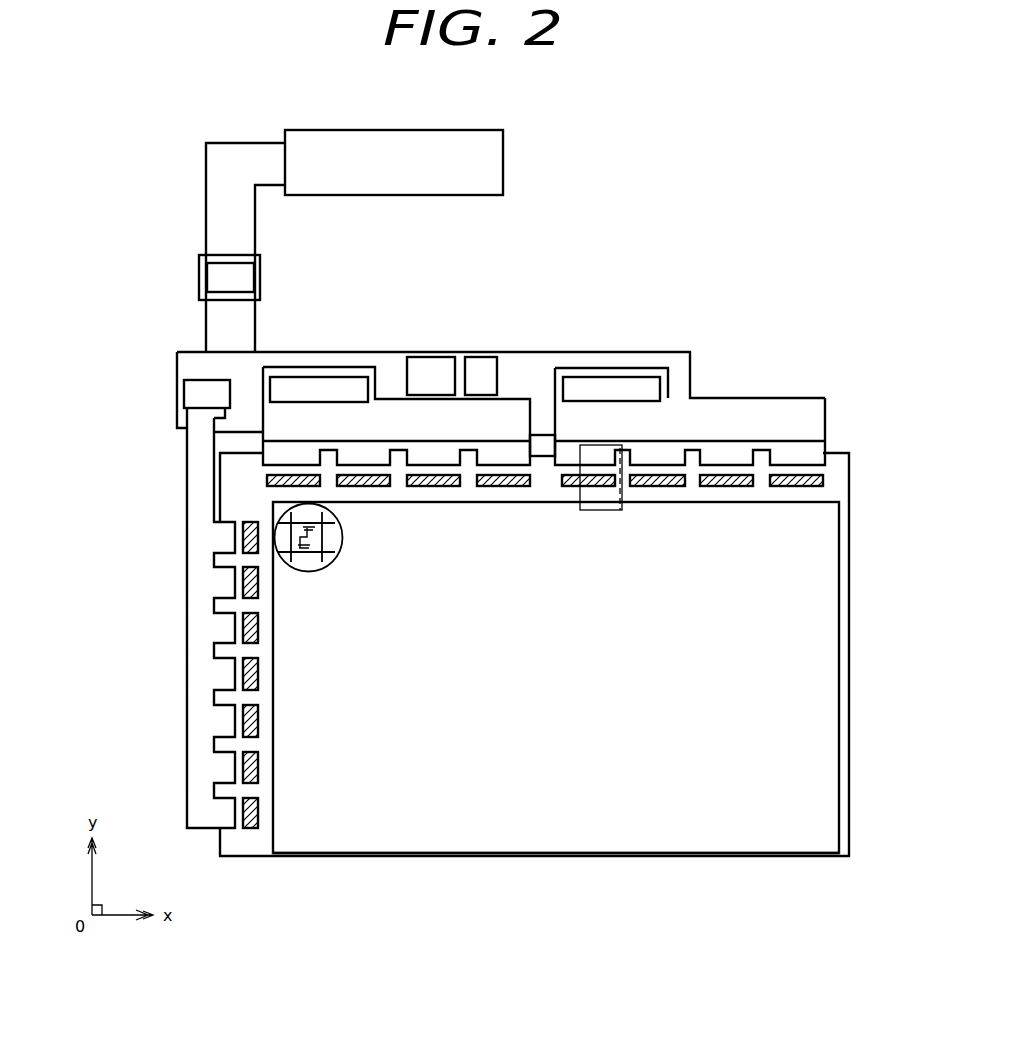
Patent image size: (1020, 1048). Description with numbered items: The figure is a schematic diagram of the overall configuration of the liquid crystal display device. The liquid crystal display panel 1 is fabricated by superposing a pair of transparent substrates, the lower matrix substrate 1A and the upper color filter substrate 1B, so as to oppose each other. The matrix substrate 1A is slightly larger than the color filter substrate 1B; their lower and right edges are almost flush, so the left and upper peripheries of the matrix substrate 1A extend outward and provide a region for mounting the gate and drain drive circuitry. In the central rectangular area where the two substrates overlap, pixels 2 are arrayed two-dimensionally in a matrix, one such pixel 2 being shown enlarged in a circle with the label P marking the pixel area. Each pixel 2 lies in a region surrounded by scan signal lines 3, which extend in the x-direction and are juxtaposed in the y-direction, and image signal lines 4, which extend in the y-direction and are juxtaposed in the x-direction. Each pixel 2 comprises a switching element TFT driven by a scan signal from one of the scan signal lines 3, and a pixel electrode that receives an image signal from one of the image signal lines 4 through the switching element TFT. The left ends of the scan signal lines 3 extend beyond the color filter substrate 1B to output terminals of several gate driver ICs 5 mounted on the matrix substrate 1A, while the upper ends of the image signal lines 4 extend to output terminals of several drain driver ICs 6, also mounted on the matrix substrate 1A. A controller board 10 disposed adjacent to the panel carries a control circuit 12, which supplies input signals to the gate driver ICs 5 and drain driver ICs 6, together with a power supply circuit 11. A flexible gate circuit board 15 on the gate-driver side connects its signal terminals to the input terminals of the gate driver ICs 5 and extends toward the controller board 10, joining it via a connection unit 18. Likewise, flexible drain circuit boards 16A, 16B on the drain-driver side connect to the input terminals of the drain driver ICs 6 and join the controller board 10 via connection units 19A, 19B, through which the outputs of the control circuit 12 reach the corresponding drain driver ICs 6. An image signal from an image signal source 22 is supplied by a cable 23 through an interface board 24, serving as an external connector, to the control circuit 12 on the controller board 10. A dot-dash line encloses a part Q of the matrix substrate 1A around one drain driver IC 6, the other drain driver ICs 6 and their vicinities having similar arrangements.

The liquid crystal display panel 1 is at (776, 856).
The matrix substrate 1A is at (260, 857).
The color filter substrate 1B is at (545, 845).
The pixel 2 is at (373, 560).
The scan signal line 3 is at (333, 548).
The image signal line 4 is at (328, 525).
The gate driver IC 5 is at (258, 718).
The drain driver IC 6 is at (505, 489).
The controller board 10 is at (192, 357).
The power supply circuit 11 is at (478, 368).
The control circuit 12 is at (412, 373).
The gate circuit board 15 is at (202, 830).
The drain circuit board 16A is at (513, 396).
The drain circuit board 16B is at (720, 408).
The connection unit 18 is at (185, 394).
The connection unit 19A is at (312, 383).
The connection unit 19B is at (600, 383).
The image signal source 22 is at (361, 130).
The cable 23 is at (222, 143).
The interface board 24 is at (274, 237).
The pixel region P is at (293, 653).
The part of the matrix substrate Q is at (600, 510).
The switching element TFT is at (311, 553).